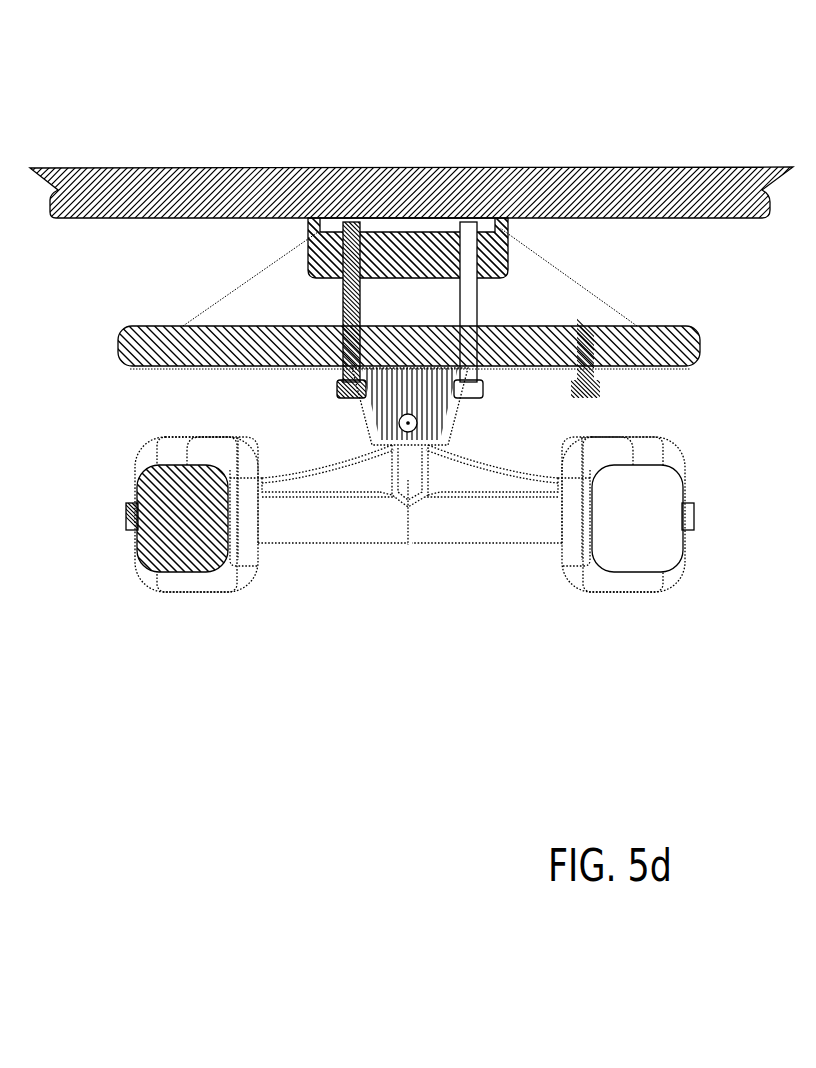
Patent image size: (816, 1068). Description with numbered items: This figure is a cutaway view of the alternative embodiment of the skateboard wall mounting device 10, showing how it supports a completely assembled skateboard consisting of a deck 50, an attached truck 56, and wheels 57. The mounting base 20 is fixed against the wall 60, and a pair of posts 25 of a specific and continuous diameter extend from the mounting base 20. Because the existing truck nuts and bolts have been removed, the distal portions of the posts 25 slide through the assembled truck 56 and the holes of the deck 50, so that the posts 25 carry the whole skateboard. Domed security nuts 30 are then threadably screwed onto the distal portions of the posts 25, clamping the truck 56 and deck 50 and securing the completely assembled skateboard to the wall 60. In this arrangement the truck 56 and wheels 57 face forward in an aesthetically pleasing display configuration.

The skateboard wall mounting device 10 is at (634, 126).
The wall 60 is at (212, 184).
The mounting base 20 is at (502, 227).
The posts 25 is at (341, 300).
The skateboard deck 50 is at (151, 348).
The domed security nuts 30 is at (337, 394).
The truck 56 is at (443, 412).
The wheels 57 is at (190, 570).